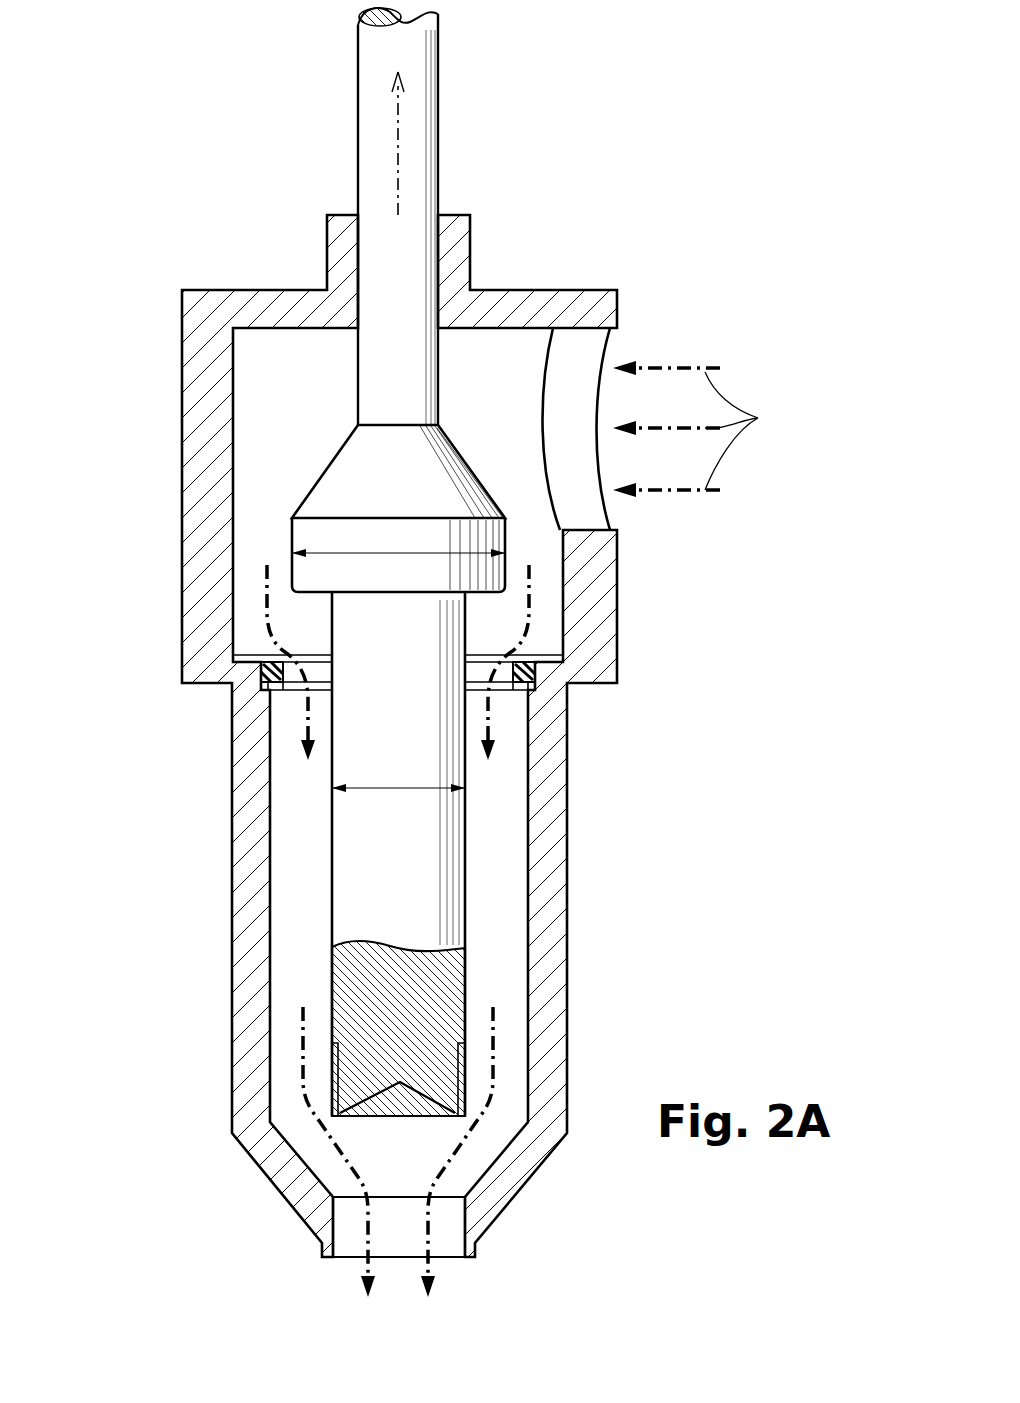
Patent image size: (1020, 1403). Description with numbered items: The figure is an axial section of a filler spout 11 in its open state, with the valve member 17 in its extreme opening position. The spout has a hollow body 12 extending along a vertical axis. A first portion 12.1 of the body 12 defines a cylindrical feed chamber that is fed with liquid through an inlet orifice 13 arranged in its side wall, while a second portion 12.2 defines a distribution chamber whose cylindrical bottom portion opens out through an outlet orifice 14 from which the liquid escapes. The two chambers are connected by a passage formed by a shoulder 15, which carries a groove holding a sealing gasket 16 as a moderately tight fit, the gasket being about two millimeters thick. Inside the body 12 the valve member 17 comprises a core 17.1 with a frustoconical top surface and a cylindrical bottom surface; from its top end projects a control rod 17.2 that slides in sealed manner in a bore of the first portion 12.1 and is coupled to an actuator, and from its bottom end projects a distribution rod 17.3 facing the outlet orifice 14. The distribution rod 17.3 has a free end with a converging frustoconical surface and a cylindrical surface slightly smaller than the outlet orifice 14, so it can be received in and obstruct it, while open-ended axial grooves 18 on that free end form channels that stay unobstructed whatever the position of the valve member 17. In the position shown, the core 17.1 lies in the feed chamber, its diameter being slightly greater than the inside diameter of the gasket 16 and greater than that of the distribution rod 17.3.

The filler spout 11 is at (637, 236).
The hollow body 12 is at (537, 290).
The first portion of the body 12.1 is at (182, 477).
The second portion of the body 12.2 is at (232, 1005).
The inlet orifice 13 is at (595, 515).
The outlet orifice 14 is at (464, 1232).
The shoulder 15 is at (545, 658).
The sealing gasket 16 is at (525, 672).
The valve member 17 is at (465, 452).
The core 17.1 is at (323, 473).
The control rod 17.2 is at (358, 43).
The distribution rod 17.3 is at (332, 870).
The axial grooves 18 is at (303, 1080).